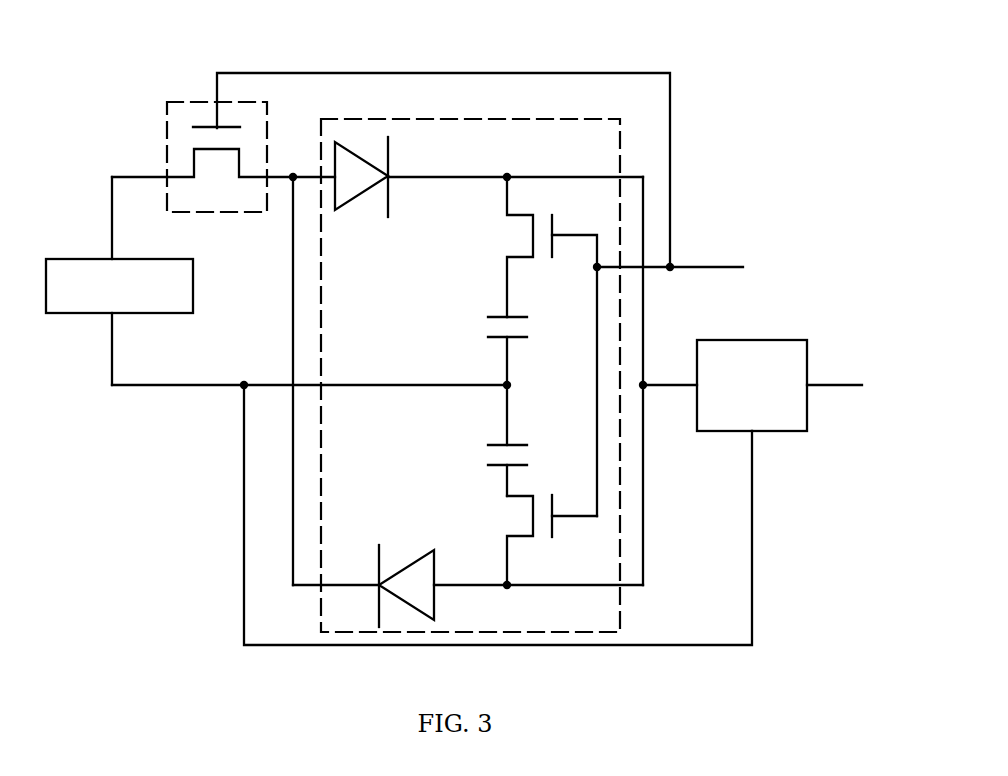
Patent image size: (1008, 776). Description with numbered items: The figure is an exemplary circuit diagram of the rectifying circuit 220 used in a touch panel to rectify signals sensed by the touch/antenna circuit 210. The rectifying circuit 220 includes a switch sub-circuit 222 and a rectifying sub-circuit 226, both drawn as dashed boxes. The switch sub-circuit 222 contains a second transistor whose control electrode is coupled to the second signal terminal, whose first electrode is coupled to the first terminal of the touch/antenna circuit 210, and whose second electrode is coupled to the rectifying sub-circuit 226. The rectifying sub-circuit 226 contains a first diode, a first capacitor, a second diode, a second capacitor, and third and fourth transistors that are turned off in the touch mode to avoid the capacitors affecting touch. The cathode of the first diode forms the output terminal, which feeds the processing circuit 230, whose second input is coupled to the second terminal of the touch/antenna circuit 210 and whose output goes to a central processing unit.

The rectifying circuit 220 is at (108, 89).
The switch sub-circuit 222 is at (267, 117).
The rectifying sub-circuit 226 is at (592, 113).
The touch/antenna circuit 210 is at (101, 258).
The processing circuit 230 is at (771, 338).